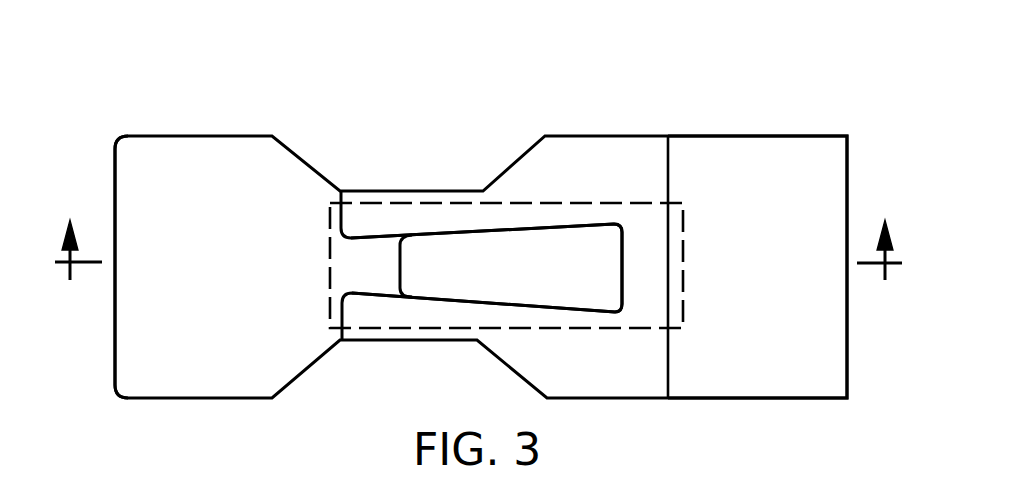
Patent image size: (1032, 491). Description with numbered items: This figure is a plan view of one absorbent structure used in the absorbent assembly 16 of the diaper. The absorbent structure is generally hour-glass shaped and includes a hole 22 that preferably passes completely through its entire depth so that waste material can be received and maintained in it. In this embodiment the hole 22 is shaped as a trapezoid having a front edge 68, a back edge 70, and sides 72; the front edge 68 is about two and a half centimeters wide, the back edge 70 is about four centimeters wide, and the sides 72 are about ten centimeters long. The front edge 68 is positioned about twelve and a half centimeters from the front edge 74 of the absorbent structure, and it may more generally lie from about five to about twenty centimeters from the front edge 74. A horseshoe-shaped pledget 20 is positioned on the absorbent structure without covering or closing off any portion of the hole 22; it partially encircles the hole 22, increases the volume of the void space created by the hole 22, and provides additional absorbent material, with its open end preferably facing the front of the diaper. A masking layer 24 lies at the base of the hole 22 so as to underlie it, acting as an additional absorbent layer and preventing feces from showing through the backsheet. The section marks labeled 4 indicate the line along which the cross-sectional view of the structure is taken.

The absorbent assembly 16 is at (281, 58).
The front edge of absorbent structure 74 is at (114, 170).
The pledget 20 is at (647, 152).
The hole 22 is at (610, 270).
The masking layer 24 is at (543, 284).
The sides 72 is at (436, 237).
The front edge 68 is at (404, 273).
The back edge 70 is at (613, 288).
The section line 4- 4 is at (478, 267).